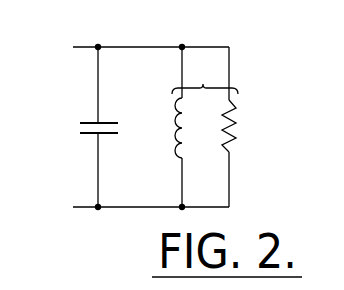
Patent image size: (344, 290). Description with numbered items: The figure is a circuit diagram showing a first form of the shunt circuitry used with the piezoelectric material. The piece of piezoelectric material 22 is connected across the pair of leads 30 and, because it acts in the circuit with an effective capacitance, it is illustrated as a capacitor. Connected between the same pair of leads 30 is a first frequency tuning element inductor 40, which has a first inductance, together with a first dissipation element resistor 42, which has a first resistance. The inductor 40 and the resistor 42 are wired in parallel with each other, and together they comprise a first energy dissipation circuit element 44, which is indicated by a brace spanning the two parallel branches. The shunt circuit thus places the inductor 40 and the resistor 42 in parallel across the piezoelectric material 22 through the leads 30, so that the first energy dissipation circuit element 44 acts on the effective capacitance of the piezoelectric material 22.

The pair of leads 30 is at (151, 130).
The piece of piezoelectric material 22 is at (74, 127).
The first frequency tuning element inductor 40 is at (156, 127).
The first dissipation element resistor 42 is at (249, 127).
The first energy dissipation circuit element 44 is at (205, 77).